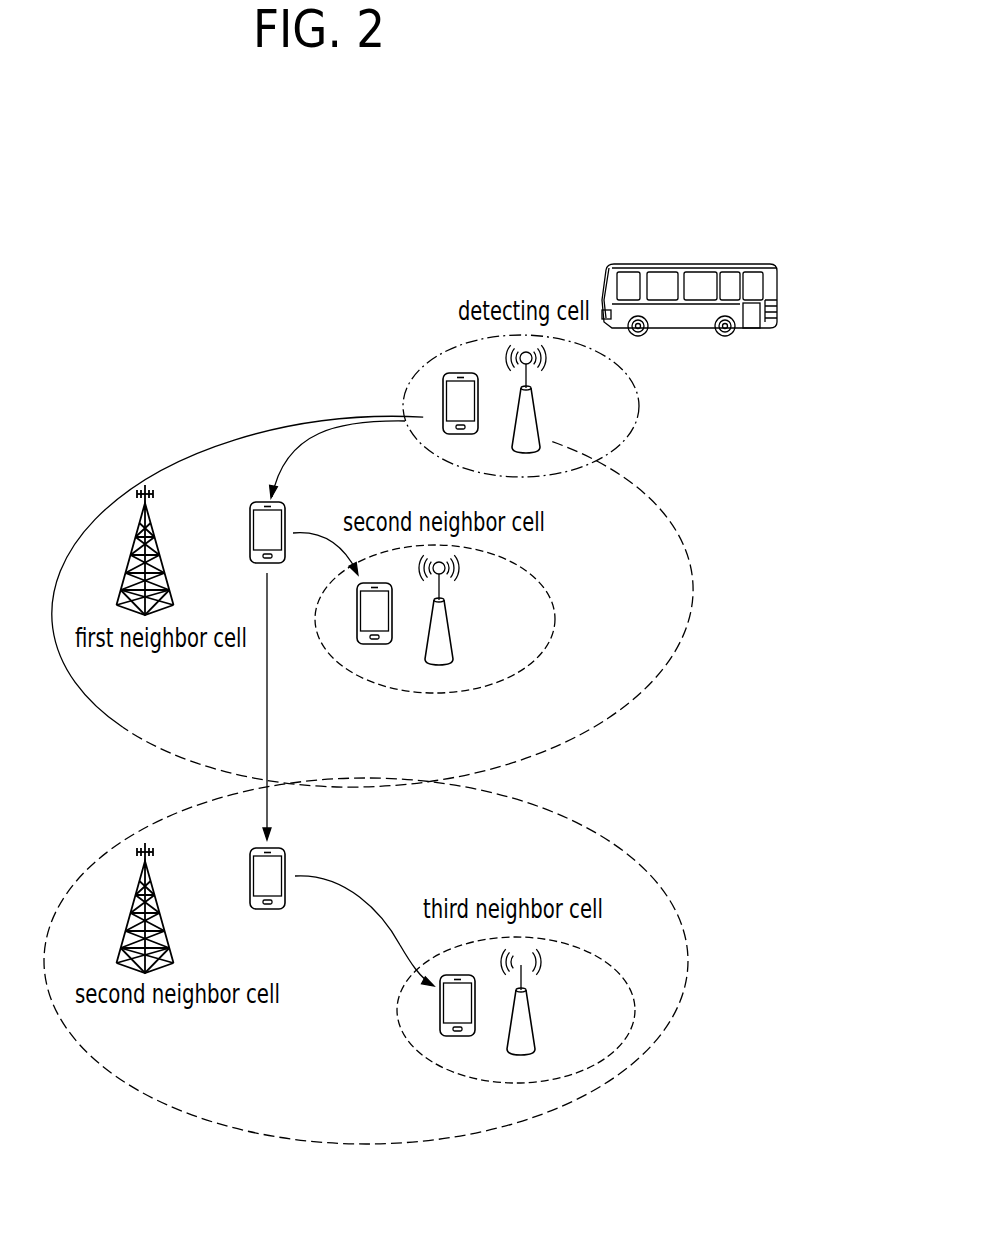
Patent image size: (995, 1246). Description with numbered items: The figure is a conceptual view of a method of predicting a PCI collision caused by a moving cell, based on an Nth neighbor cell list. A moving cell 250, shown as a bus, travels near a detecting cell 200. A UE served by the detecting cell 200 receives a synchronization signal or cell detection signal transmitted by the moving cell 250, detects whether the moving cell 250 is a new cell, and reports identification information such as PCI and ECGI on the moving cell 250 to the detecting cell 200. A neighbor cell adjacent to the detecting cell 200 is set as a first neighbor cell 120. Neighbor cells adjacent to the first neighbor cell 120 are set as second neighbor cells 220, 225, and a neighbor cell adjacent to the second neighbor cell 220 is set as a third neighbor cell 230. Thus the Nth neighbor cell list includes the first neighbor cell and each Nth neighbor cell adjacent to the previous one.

The first neighbor cell 120 is at (137, 520).
The second neighbor cell 220 is at (137, 878).
The detecting cell 200 is at (420, 364).
The moving cell 250 is at (705, 264).
The second neighbor cell 225 is at (455, 630).
The third neighbor cell 230 is at (535, 1020).